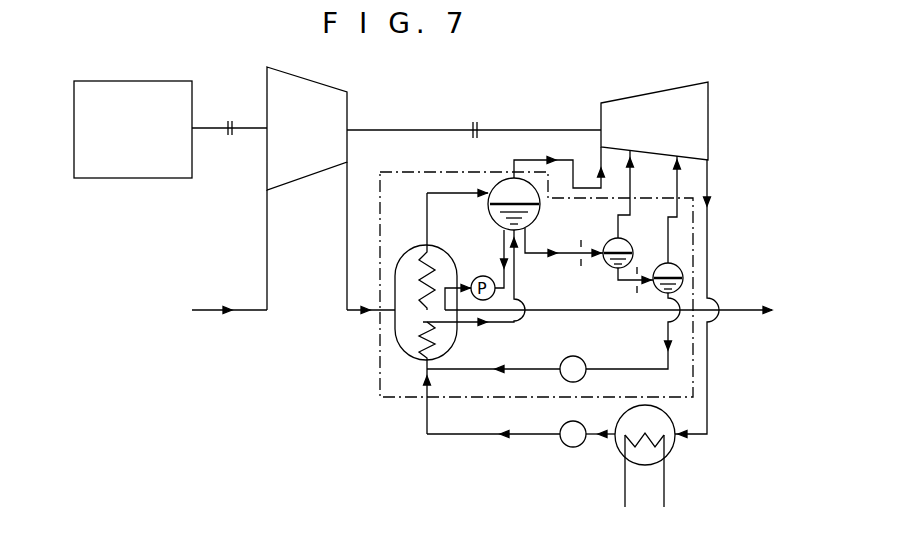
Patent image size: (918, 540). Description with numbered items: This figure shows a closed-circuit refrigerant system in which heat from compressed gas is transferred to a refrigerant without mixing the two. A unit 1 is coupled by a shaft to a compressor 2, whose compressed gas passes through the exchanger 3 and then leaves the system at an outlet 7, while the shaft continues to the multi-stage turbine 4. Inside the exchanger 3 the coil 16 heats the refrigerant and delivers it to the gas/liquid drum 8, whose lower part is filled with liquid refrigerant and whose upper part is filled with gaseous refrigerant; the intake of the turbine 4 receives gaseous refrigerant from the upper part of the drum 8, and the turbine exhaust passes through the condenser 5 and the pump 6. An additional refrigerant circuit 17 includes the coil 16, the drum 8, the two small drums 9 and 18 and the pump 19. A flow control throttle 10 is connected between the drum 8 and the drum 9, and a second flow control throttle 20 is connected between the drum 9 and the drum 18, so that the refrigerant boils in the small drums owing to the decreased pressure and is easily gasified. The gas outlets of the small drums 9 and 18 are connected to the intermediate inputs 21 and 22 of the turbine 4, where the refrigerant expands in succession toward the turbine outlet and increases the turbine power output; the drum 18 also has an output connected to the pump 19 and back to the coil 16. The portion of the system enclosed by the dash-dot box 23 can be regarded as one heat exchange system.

The generator 1 is at (138, 168).
The compressor 2 is at (304, 167).
The exchanger 3 is at (394, 316).
The turbine 4 is at (700, 128).
The condenser 5 is at (666, 455).
The pump 6 is at (572, 448).
The exhaust outlet 7 is at (745, 306).
The gas/liquid drum 8 is at (508, 185).
The small drum 9 is at (622, 240).
The flow control throttle 10 is at (578, 243).
The coil 16 is at (420, 336).
The refrigerant circuit 17 is at (670, 365).
The small drum 18 is at (675, 262).
The pump 19 is at (563, 383).
The flow control throttle 20 is at (634, 289).
The intermediate input 21 is at (630, 175).
The intermediate input 22 is at (680, 182).
The box 23 is at (408, 398).